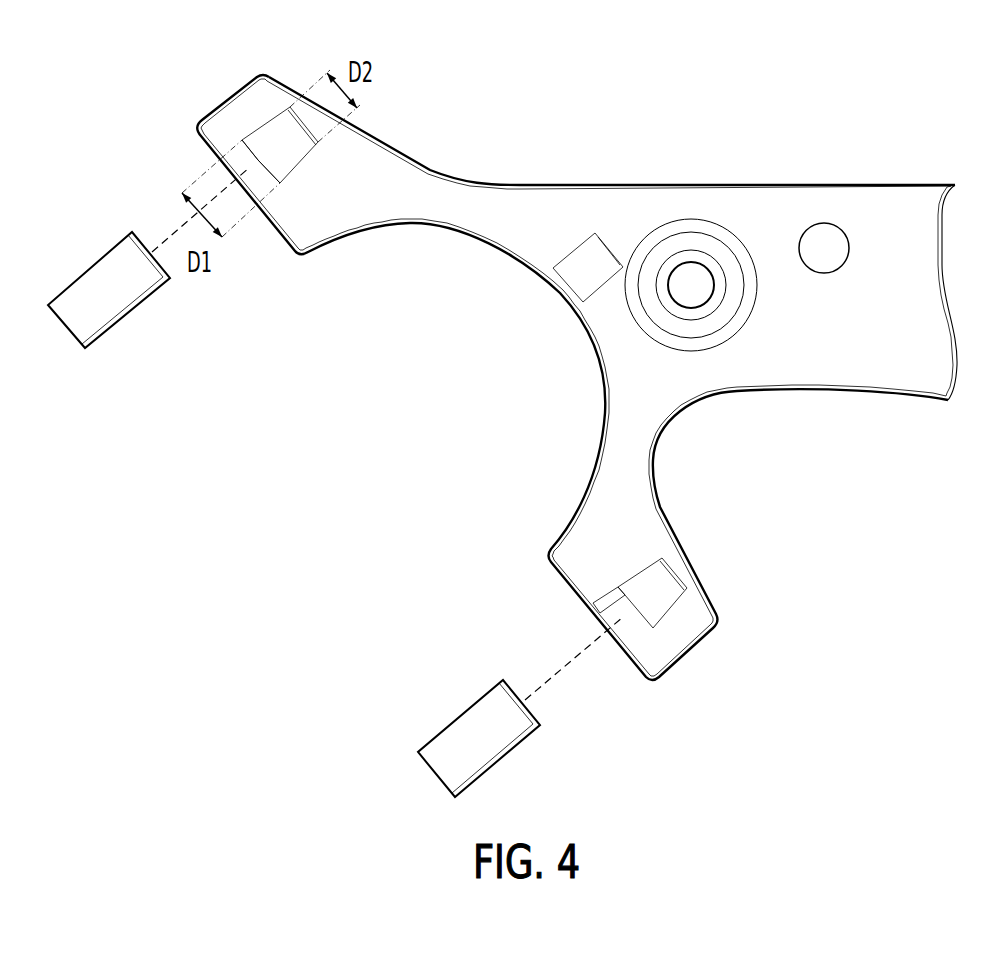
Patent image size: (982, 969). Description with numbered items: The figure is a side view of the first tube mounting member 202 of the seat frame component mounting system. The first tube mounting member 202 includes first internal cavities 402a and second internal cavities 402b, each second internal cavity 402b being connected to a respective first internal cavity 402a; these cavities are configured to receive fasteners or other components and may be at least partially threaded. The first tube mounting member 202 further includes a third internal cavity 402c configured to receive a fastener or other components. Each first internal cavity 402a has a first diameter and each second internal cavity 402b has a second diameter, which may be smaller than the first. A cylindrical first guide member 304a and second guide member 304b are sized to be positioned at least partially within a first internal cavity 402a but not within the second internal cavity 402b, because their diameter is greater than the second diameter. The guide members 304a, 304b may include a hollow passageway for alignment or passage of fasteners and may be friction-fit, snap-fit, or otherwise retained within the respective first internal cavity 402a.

The first tube mounting member 202 is at (572, 97).
The first guide member 304a is at (93, 287).
The second guide member 304b is at (452, 737).
The first internal cavity 402a is at (240, 163).
The second internal cavity 402b is at (273, 140).
The third internal cavity 402c is at (592, 247).